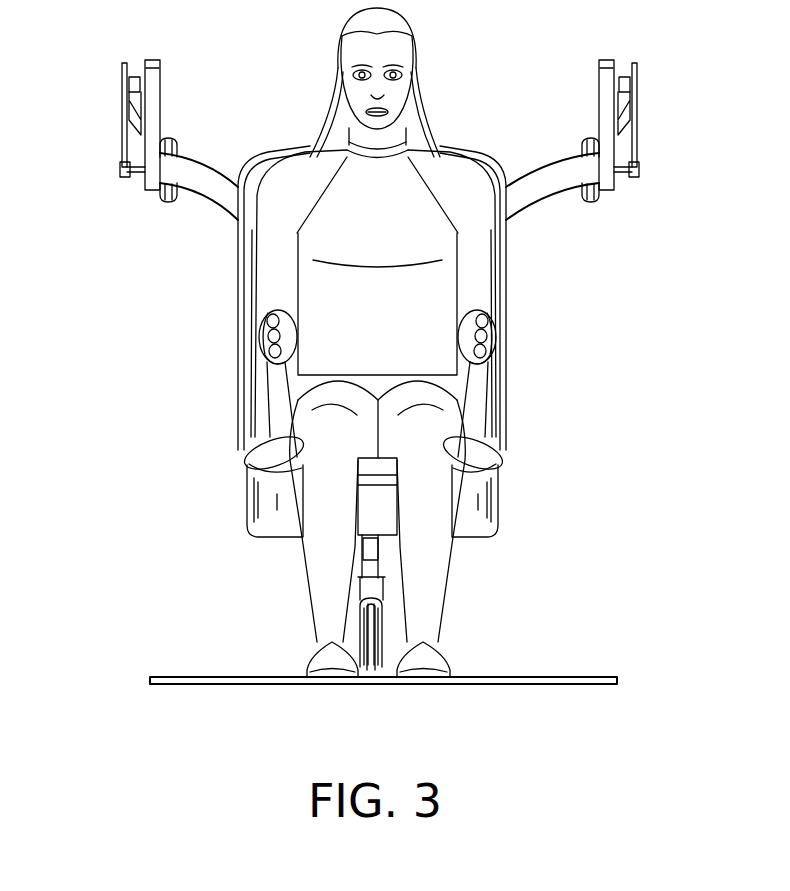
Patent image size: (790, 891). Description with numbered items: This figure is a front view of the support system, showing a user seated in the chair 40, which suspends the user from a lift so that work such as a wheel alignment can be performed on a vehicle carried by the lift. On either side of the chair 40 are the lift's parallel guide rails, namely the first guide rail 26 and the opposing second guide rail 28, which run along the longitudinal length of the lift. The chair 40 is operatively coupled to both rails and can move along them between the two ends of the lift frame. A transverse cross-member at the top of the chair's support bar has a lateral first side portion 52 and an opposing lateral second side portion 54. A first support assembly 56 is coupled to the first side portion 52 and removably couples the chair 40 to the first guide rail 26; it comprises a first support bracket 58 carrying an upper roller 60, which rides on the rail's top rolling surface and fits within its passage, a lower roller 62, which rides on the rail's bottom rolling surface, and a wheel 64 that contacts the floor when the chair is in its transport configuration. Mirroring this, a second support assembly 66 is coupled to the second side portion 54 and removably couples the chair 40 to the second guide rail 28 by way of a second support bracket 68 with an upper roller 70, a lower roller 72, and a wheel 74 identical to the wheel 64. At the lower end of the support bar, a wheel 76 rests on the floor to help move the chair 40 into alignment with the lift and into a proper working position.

The first guide rail 26 is at (637, 88).
The second guide rail 28 is at (122, 90).
The chair 40 is at (510, 460).
The lateral first side portion 52 is at (548, 173).
The lateral second side portion 54 is at (223, 177).
The first support assembly 56 is at (587, 48).
The first support bracket 58 is at (614, 184).
The upper roller 60 is at (624, 77).
The lower roller 62 is at (639, 172).
The wheel 64 is at (588, 207).
The second support assembly 66 is at (183, 46).
The second support bracket 68 is at (142, 182).
The upper roller 70 is at (134, 77).
The lower roller 72 is at (120, 170).
The wheel 74 is at (172, 204).
The wheel 76 is at (367, 676).